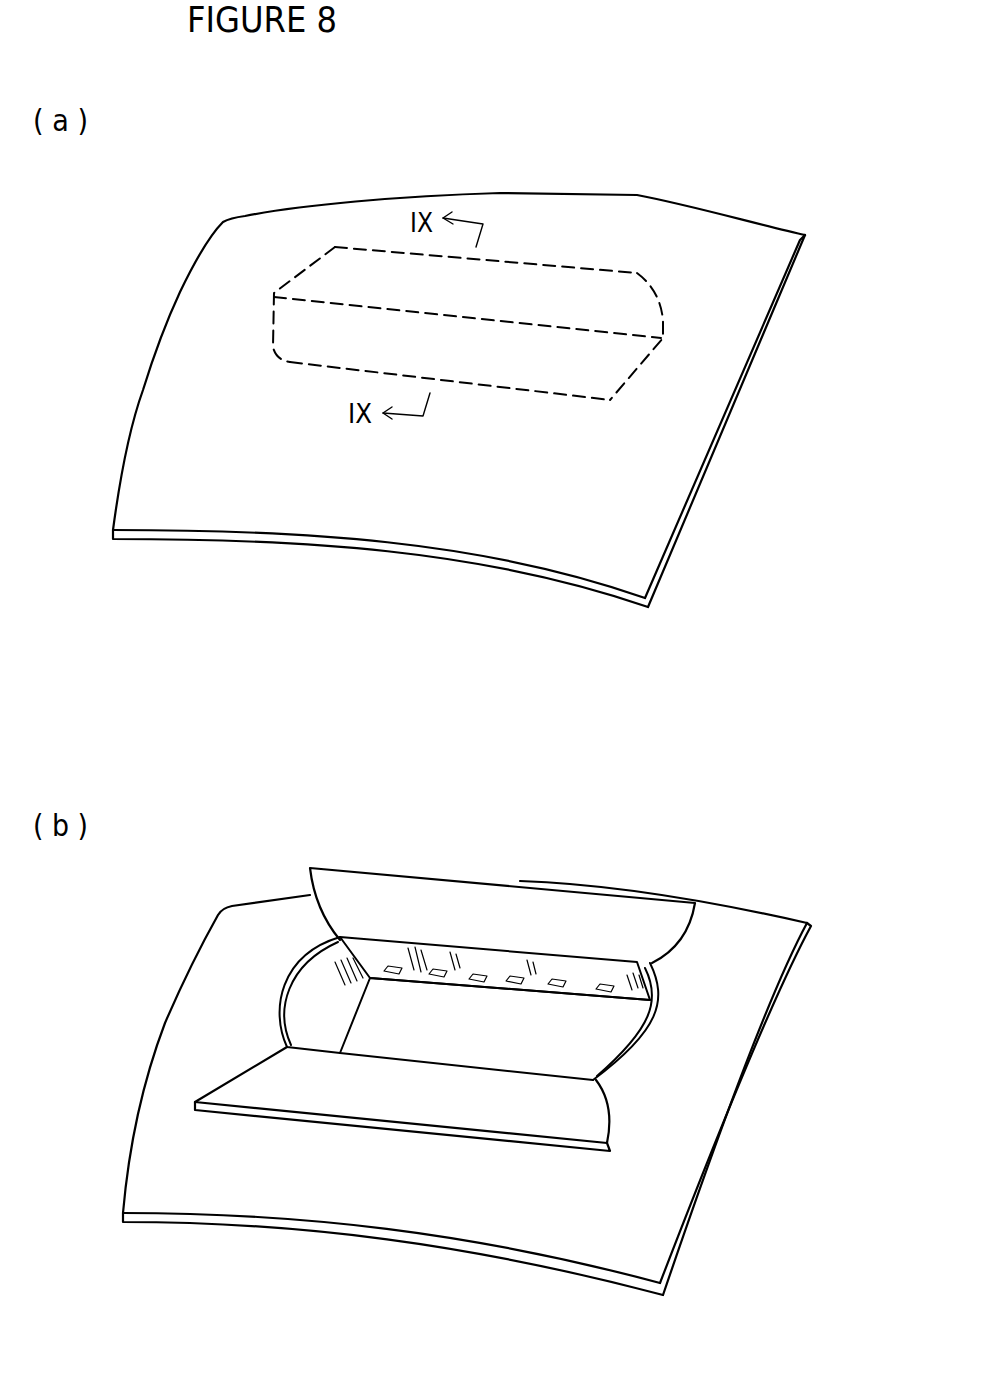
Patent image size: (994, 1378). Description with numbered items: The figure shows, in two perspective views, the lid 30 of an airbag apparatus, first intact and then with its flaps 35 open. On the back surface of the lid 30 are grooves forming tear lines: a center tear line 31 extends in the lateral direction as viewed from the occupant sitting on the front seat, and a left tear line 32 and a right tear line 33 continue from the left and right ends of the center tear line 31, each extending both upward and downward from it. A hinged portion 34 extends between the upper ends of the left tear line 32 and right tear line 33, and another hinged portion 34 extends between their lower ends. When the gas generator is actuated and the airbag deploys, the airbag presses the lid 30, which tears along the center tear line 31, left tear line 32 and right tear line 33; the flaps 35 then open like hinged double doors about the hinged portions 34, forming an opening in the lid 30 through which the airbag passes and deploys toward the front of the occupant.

The lid 30 is at (267, 198).
The center tear line 31 is at (388, 307).
The left tear line 32 is at (297, 273).
The right tear line 33 is at (664, 313).
The hinged portion 34 is at (572, 267).
The flaps 35 is at (523, 897).